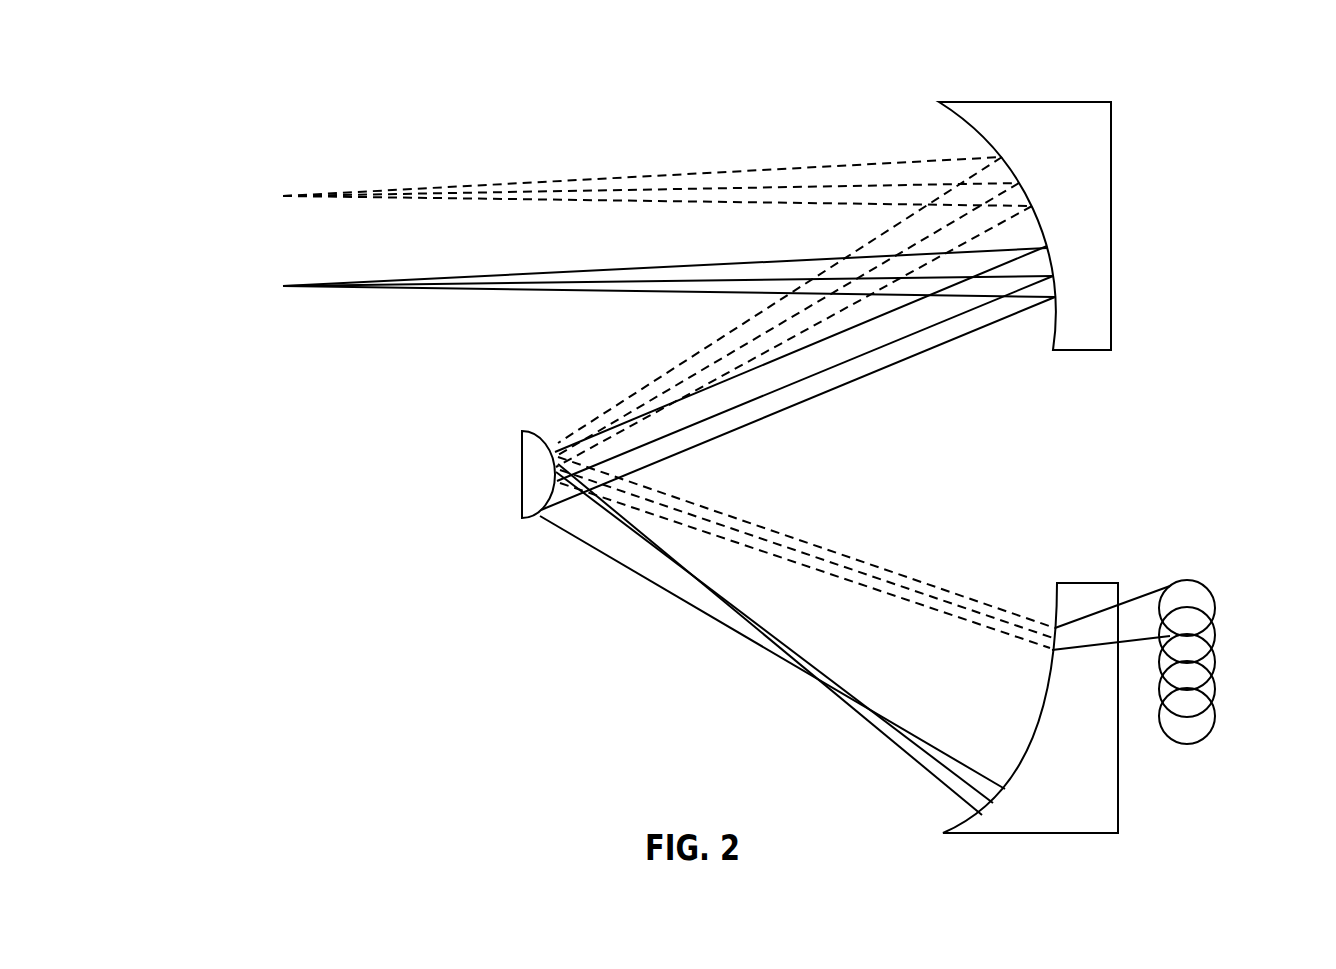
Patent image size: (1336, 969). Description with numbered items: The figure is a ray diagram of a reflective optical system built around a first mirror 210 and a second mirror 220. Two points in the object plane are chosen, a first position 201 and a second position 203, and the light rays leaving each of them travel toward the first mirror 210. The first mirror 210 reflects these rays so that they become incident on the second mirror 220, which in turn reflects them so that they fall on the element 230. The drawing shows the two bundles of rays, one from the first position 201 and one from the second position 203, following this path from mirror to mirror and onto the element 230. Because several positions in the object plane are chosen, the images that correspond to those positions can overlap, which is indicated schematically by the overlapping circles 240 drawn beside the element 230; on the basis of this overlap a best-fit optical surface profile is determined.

The first position 201 is at (280, 197).
The second position 203 is at (280, 286).
The first mirror 210 is at (1085, 102).
The second mirror 220 is at (522, 490).
The element 230 is at (1085, 583).
The overlapping circles 240 is at (1213, 577).